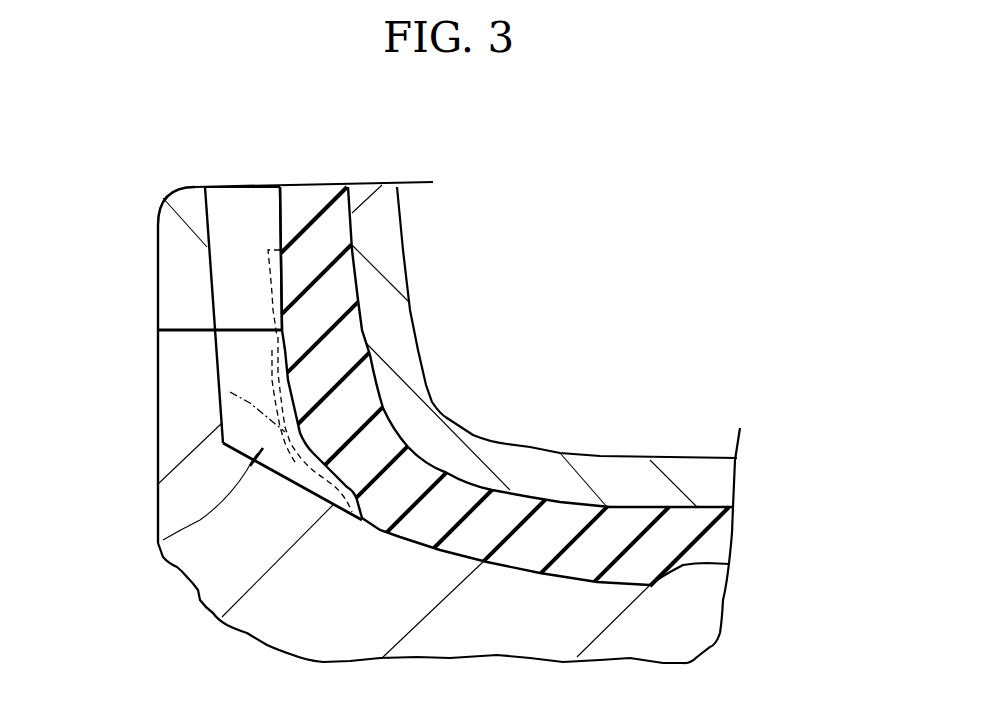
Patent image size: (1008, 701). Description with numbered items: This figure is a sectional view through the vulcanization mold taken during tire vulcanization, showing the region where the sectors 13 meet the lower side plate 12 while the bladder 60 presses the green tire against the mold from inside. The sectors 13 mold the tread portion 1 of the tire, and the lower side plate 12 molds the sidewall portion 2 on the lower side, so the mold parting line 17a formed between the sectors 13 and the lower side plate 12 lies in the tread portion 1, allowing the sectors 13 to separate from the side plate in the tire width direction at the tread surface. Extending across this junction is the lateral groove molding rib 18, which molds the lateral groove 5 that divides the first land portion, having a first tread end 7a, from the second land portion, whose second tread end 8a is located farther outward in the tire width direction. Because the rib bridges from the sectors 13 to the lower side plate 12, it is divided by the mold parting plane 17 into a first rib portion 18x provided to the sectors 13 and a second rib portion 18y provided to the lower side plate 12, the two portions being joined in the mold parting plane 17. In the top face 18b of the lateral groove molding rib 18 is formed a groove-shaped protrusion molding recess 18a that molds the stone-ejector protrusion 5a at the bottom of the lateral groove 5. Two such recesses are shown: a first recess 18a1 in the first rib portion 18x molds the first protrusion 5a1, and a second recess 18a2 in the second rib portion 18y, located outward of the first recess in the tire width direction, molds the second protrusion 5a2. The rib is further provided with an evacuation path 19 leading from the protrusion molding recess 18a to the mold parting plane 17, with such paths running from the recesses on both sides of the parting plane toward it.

The tread portion 1 is at (283, 265).
The sidewall portion 2 is at (673, 530).
The lateral groove 5 is at (280, 213).
The protrusion 5a is at (164, 270).
The first protrusion 5a1 is at (267, 265).
The second protrusion 5a2 is at (277, 358).
The first tread end 7a is at (222, 388).
The second tread end 8a is at (224, 444).
The lower side plate 12 is at (677, 610).
The sectors 13 is at (177, 202).
The mold parting plane 17 is at (187, 333).
The mold parting line 17a is at (283, 330).
The lateral groove molding rib 18 is at (227, 252).
The protrusion molding recess 18a is at (71, 379).
The first recess 18a1 is at (270, 267).
The second recess 18a2 is at (287, 393).
The top face 18b is at (352, 212).
The first rib portion 18x is at (220, 212).
The second rib portion 18y is at (158, 545).
The evacuation path 19 is at (273, 327).
The bladder 60 is at (380, 293).